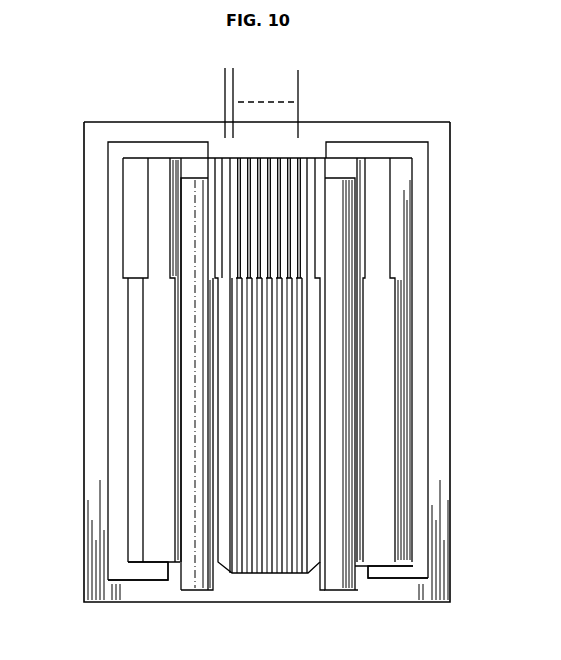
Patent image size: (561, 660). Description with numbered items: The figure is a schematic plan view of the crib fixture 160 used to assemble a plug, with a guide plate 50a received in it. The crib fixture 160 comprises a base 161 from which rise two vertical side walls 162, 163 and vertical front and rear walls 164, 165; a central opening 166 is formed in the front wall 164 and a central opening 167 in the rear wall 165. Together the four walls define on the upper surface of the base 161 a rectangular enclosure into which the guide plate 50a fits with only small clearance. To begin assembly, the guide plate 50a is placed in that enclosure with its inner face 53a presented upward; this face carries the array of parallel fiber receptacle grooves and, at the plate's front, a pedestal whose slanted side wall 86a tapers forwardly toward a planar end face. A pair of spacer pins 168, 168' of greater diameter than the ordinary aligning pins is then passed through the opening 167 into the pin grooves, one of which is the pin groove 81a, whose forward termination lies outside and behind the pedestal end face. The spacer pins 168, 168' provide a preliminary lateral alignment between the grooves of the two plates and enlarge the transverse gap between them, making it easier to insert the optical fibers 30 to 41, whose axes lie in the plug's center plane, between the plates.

The crib fixture 160 is at (514, 364).
The central opening 167 is at (317, 132).
The optical fiber 30 is at (222, 76).
The optical fiber 41 is at (303, 72).
The side wall 162 is at (118, 474).
The guide plate 50a is at (418, 440).
The rear wall 165 is at (158, 148).
The inner face 53a is at (158, 381).
The slanted side wall 86a is at (180, 314).
The spacer pin 168' is at (189, 409).
The base 161 is at (241, 587).
The central opening 166 is at (315, 583).
The spacer pin 168 is at (349, 601).
The pin groove 81a is at (360, 292).
The side wall 163 is at (413, 502).
The front wall 164 is at (142, 570).